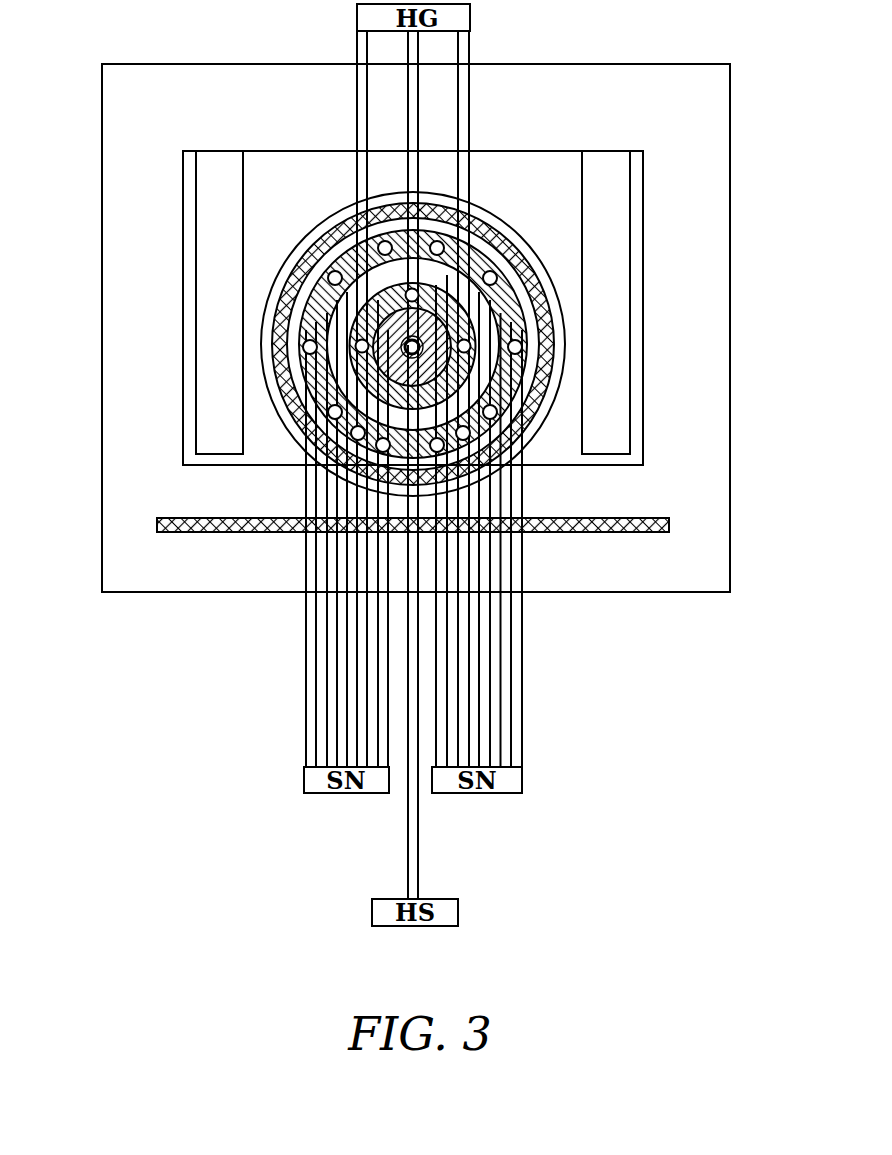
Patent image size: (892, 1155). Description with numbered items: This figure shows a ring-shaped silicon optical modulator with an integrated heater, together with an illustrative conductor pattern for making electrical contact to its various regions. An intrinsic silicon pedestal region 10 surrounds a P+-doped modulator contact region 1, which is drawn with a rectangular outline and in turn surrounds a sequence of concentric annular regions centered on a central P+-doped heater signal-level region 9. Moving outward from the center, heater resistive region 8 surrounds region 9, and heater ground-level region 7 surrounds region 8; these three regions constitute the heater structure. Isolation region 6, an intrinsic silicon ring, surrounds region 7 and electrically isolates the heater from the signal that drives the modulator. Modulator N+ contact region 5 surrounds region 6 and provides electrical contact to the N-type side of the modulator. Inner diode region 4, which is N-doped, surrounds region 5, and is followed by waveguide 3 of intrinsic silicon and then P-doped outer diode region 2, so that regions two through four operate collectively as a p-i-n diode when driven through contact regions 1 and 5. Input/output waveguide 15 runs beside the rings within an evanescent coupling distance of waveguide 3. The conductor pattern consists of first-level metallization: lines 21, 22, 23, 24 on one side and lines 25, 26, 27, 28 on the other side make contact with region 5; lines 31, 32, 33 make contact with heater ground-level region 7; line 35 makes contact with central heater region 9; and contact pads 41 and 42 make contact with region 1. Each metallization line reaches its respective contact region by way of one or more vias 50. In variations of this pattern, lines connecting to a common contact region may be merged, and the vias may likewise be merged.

The modulator P+ contact region 1 is at (563, 176).
The outer diode region 2 is at (545, 262).
The waveguide 3 is at (553, 300).
The inner diode region 4 is at (537, 338).
The modulator N+ contact region 5 is at (467, 397).
The isolation region 6 is at (492, 406).
The heater ground-level region 7 is at (405, 342).
The heater resistive region 8 is at (393, 368).
The heater signal-level region 9 is at (377, 327).
The intrinsic silicon pedestal region 10 is at (721, 84).
The input/output waveguide 15 is at (155, 518).
The first-level metallization line 21 is at (306, 597).
The first-level metallization line 22 is at (330, 637).
The first-level metallization line 23 is at (362, 660).
The first-level metallization line 24 is at (379, 686).
The first-level metallization line 25 is at (517, 622).
The first-level metallization line 26 is at (488, 650).
The first-level metallization line 27 is at (467, 677).
The first-level metallization line 28 is at (439, 706).
The first-level metallization line 31 is at (365, 48).
The first-level metallization line 32 is at (411, 83).
The first-level metallization line 33 is at (472, 82).
The first-level metallization line 35 is at (410, 863).
The contact pad 41 is at (225, 157).
The contact pad 42 is at (625, 157).
The vias 50 is at (383, 445).